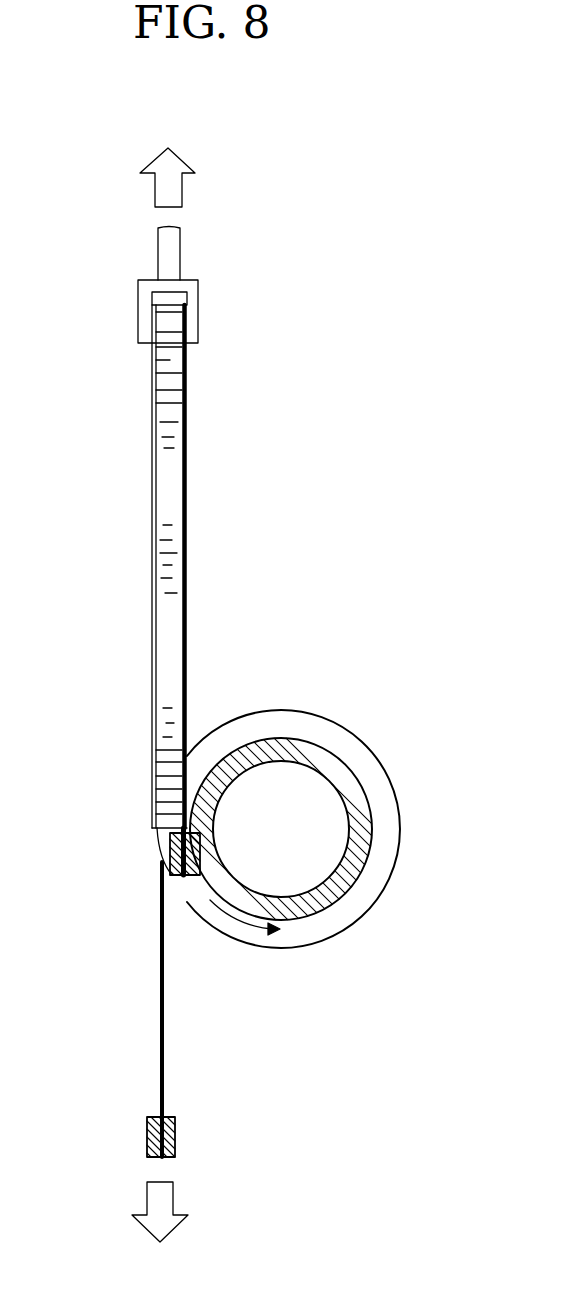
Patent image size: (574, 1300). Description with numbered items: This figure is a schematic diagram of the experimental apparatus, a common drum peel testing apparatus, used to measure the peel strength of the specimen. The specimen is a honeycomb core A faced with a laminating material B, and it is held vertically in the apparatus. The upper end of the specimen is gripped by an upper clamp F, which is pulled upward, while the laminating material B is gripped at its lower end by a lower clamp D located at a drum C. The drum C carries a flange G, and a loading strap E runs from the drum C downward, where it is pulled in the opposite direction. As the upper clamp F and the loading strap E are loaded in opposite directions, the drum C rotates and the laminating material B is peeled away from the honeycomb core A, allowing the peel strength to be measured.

The honeycomb core A is at (167, 482).
The laminating material B is at (185, 530).
The drum C is at (318, 762).
The lower clamp D is at (183, 878).
The loading strap E is at (157, 1053).
The upper clamp F is at (200, 277).
The flange G is at (363, 903).